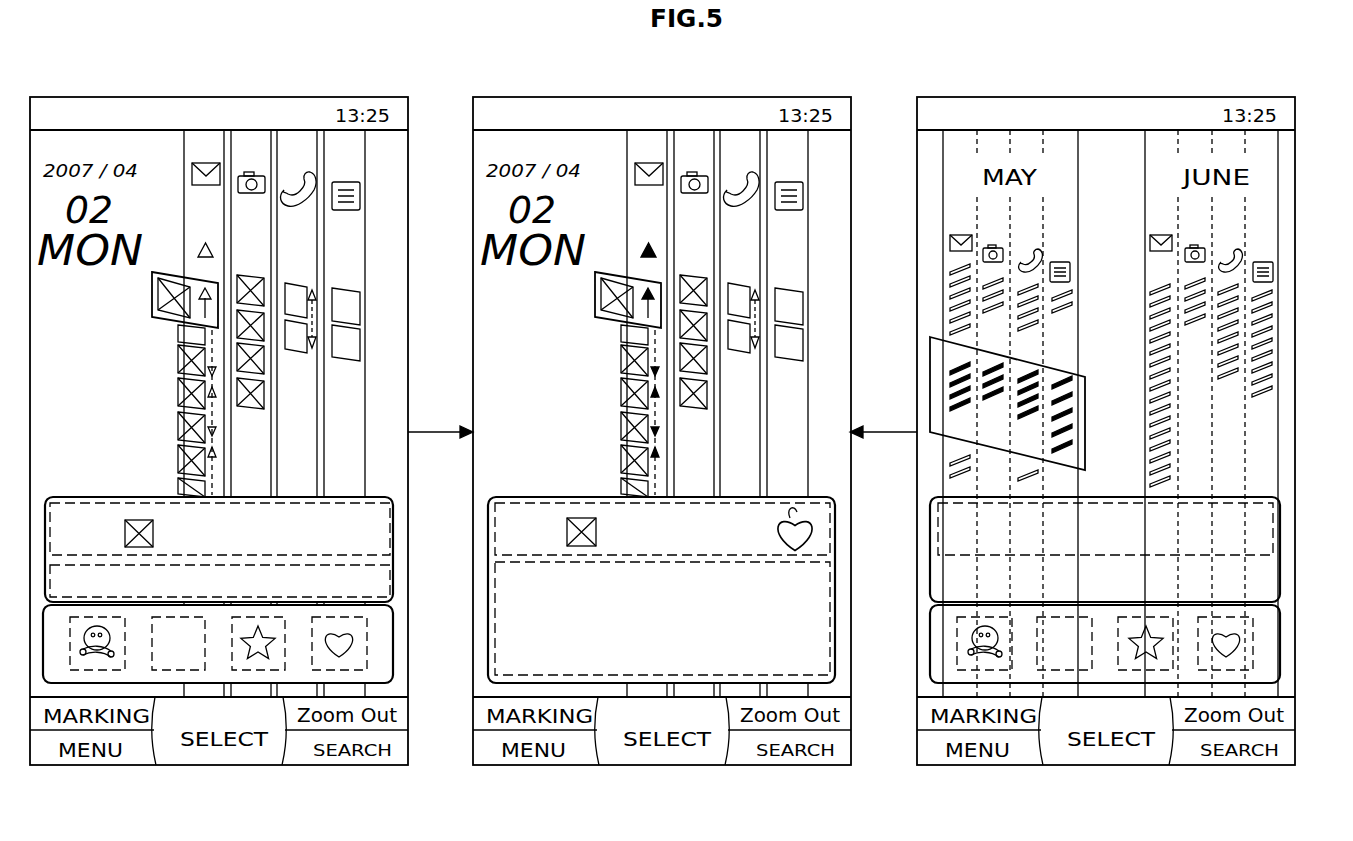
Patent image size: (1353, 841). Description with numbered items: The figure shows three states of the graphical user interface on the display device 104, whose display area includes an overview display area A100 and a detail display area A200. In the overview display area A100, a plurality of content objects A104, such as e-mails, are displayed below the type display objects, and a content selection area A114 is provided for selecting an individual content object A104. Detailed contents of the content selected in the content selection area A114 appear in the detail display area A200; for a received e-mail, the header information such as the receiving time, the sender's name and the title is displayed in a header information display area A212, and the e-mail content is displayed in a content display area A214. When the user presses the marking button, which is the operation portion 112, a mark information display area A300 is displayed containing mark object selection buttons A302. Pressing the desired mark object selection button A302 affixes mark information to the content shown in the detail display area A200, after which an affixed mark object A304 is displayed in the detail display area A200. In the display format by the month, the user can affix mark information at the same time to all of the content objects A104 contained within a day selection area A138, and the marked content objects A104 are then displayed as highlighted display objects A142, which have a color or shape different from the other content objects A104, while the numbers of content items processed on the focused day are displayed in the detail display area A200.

The display device 104 is at (45, 97).
The operation portion 112 is at (413, 743).
The overview display area A100 is at (513, 401).
The content selection area A114 is at (596, 305).
The detail display area A200 is at (400, 543).
The mark information display area A300 is at (400, 617).
The mark object selection button A302 is at (368, 643).
The affixed mark object A304 is at (795, 514).
The header information display area A212 is at (833, 546).
The content display area A214 is at (833, 606).
The content object A104 is at (947, 288).
The highlighted display object A142 is at (947, 374).
The day selection area A138 is at (1088, 378).